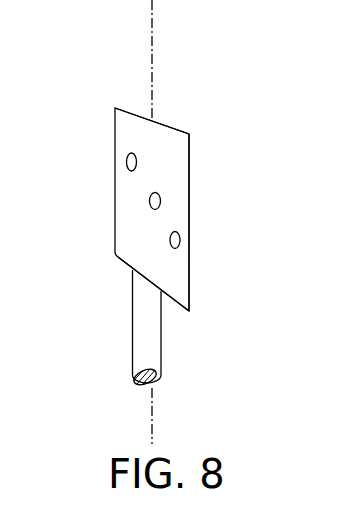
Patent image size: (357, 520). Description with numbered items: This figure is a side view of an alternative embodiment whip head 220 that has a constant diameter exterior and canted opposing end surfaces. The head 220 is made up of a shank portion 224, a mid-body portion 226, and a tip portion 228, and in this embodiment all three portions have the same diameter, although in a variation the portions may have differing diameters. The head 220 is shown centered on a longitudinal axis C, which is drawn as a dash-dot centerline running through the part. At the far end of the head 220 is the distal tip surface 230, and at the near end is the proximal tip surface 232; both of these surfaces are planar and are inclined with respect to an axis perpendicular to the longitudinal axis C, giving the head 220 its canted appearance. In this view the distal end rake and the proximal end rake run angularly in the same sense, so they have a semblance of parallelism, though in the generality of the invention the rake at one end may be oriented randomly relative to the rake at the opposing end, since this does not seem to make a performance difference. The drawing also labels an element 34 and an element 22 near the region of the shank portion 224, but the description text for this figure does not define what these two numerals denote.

The centerline axis C is at (152, 25).
The plate assembly 220 is at (240, 175).
The top edge of plate 230 is at (156, 124).
The right side edge of plate 224 is at (175, 269).
The bottom angled edge of plate 232 is at (178, 305).
The upper aperture 228 is at (121, 142).
The middle aperture 226 is at (137, 200).
The aperture / fastener hole 34 is at (161, 202).
The wire / rod 22 is at (148, 361).